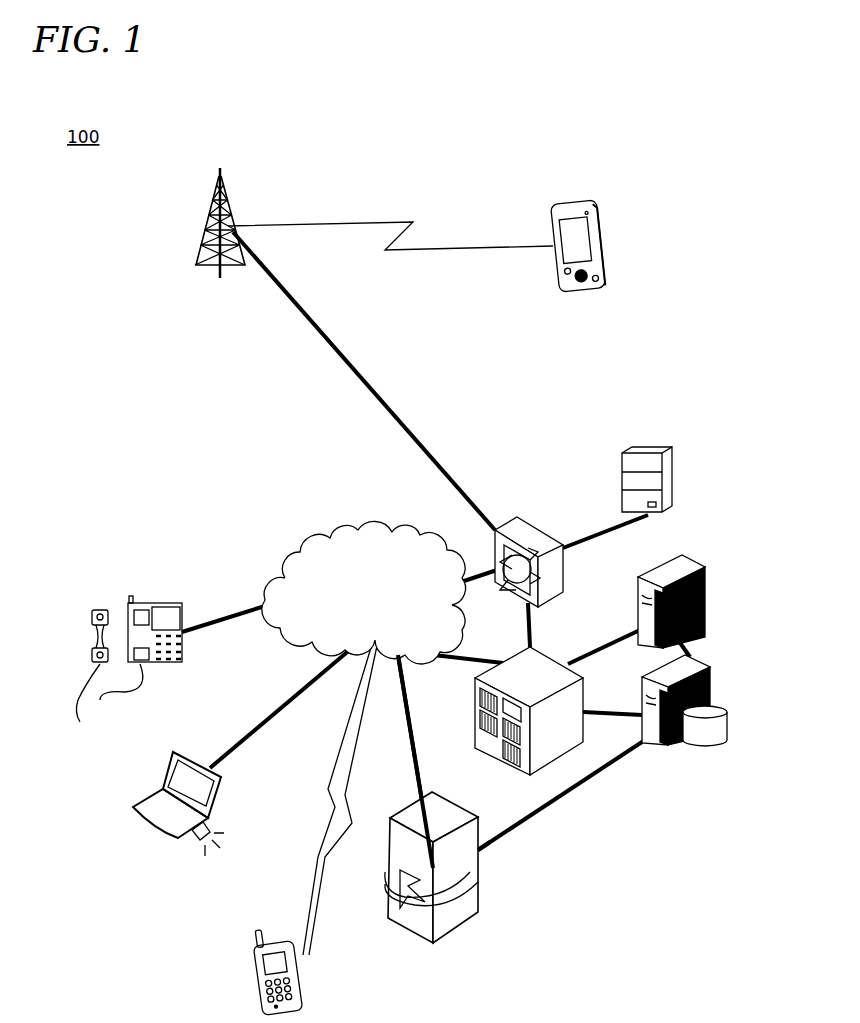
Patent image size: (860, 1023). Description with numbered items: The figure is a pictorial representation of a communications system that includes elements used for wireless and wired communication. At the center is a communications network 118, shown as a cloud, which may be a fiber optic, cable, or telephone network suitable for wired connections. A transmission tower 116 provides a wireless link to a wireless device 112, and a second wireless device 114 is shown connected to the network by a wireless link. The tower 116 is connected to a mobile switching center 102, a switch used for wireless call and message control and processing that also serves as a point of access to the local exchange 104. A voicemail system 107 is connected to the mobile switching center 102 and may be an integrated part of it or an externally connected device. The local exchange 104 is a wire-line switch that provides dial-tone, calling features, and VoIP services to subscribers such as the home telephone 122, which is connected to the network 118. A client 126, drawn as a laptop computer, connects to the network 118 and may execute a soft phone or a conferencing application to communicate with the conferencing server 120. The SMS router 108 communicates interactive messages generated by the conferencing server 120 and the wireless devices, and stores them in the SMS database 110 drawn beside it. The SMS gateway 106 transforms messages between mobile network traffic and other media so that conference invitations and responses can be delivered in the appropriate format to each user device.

The mobile switching center 102 is at (518, 516).
The local exchange 104 is at (529, 711).
The SMS gateway 106 is at (465, 920).
The voicemail system 107 is at (640, 458).
The SMS router 108 is at (640, 745).
The SMS database 110 is at (738, 742).
The wireless device 112 is at (603, 213).
The wireless device 114 is at (300, 965).
The transmission tower 116 is at (205, 224).
The communications network 118 is at (364, 592).
The conferencing server 120 is at (663, 580).
The home telephone 122 is at (120, 672).
The client 126 is at (232, 801).